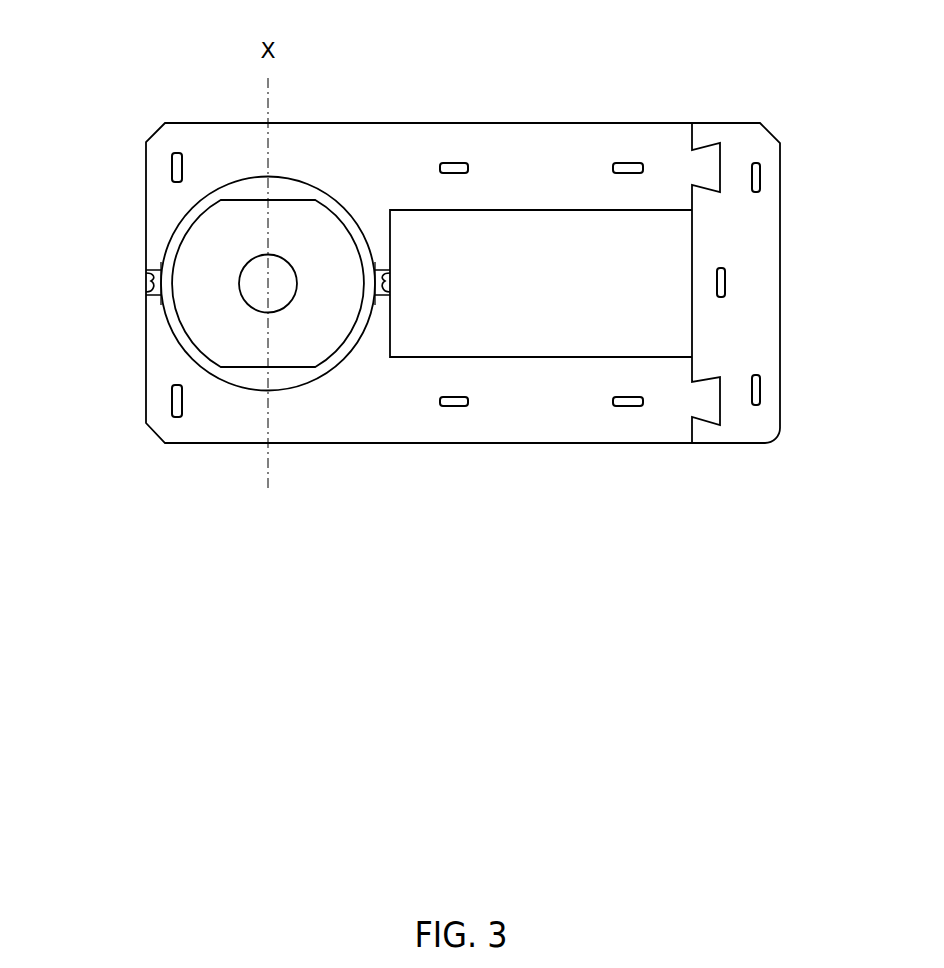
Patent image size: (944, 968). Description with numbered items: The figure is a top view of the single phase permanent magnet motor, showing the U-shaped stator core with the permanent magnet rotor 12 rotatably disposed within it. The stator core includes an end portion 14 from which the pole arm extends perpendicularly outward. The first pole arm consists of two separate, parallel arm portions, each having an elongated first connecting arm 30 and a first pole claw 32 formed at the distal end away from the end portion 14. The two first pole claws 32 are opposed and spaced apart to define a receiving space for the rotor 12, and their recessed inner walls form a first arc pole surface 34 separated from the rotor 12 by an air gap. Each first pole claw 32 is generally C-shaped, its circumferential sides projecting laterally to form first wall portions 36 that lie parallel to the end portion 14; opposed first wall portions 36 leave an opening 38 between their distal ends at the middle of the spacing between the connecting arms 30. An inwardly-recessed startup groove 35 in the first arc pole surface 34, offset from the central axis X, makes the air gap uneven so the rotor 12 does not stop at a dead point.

The permanent magnet rotor 12 is at (260, 348).
The end portion 14 is at (750, 235).
The first connecting arm 30 is at (548, 150).
The first pole claw 32 is at (308, 170).
The first arc pole surface 34 is at (240, 180).
The startup groove 35 is at (173, 220).
The first wall portion 36 is at (383, 255).
The opening 38 is at (150, 283).